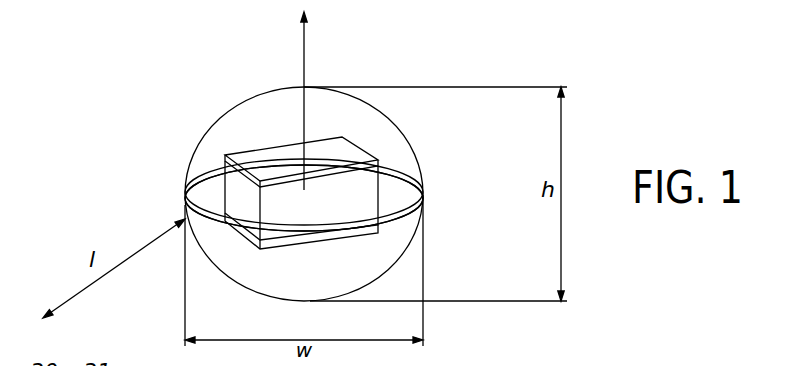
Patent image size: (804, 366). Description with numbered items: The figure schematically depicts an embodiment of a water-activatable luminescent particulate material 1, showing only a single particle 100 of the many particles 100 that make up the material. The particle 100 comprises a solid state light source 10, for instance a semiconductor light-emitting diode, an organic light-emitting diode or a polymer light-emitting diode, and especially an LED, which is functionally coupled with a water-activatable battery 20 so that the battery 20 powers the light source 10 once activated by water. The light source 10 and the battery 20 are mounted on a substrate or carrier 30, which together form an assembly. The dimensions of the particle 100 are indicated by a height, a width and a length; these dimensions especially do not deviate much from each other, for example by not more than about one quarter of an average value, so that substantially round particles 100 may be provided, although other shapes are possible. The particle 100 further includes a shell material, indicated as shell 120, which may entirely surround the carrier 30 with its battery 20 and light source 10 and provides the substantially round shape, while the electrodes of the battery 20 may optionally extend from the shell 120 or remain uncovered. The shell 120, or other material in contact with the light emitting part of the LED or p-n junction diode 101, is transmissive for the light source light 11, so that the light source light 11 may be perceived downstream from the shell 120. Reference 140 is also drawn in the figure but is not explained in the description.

The water-activatable luminescent particulate material 1 is at (563, 50).
The solid state light source 10 is at (206, 195).
The light source light 11 is at (303, 38).
The water-activatable battery 20 is at (260, 168).
The substrate or carrier 30 is at (403, 189).
The particle 100 is at (336, 70).
The p-n junction diode 101 is at (187, 218).
The shell 120 is at (345, 122).
The light emitting region 140 is at (125, 124).